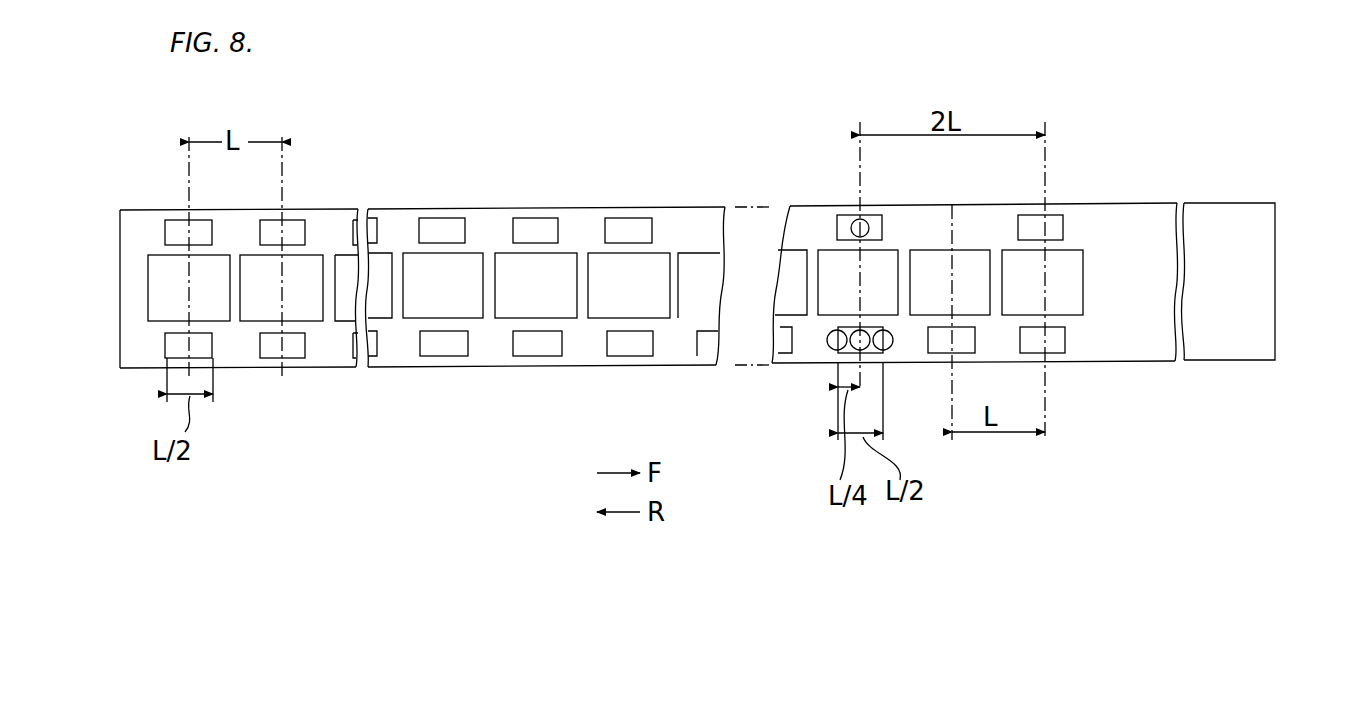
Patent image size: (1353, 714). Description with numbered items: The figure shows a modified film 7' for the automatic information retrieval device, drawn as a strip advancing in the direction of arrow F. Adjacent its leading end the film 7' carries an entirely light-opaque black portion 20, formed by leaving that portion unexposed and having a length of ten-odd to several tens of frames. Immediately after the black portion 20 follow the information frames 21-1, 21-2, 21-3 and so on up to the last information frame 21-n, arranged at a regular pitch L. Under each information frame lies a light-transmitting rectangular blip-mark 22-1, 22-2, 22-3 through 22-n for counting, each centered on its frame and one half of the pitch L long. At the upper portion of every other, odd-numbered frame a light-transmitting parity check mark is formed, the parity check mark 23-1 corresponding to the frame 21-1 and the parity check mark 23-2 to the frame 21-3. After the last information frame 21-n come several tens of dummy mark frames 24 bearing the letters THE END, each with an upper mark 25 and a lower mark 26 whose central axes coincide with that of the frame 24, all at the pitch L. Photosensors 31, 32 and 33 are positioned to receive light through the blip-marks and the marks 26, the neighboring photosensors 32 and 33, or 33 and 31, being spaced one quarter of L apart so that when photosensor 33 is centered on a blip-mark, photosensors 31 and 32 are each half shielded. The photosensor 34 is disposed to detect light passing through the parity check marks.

The film 7' is at (649, 233).
The black portion 20 is at (1153, 206).
The first information frame 21-1 is at (1075, 300).
The information frame 21-2 is at (972, 260).
The information frame 21-3 is at (825, 262).
The last information frame 21-n is at (655, 260).
The blip-mark 22-1 is at (1053, 343).
The blip-mark 22-2 is at (945, 345).
The blip-mark 22-3 is at (850, 355).
The blip-mark 22-n is at (607, 340).
The parity check mark 23-1 is at (1052, 222).
The parity check mark 23-2 is at (845, 225).
The dummy mark frame 24 is at (160, 265).
The mark 25 is at (180, 227).
The mark 26 is at (208, 348).
The photosensor 31 is at (890, 350).
The photosensor 32 is at (828, 345).
The photosensor 33 is at (860, 352).
The photosensor 34 is at (865, 218).